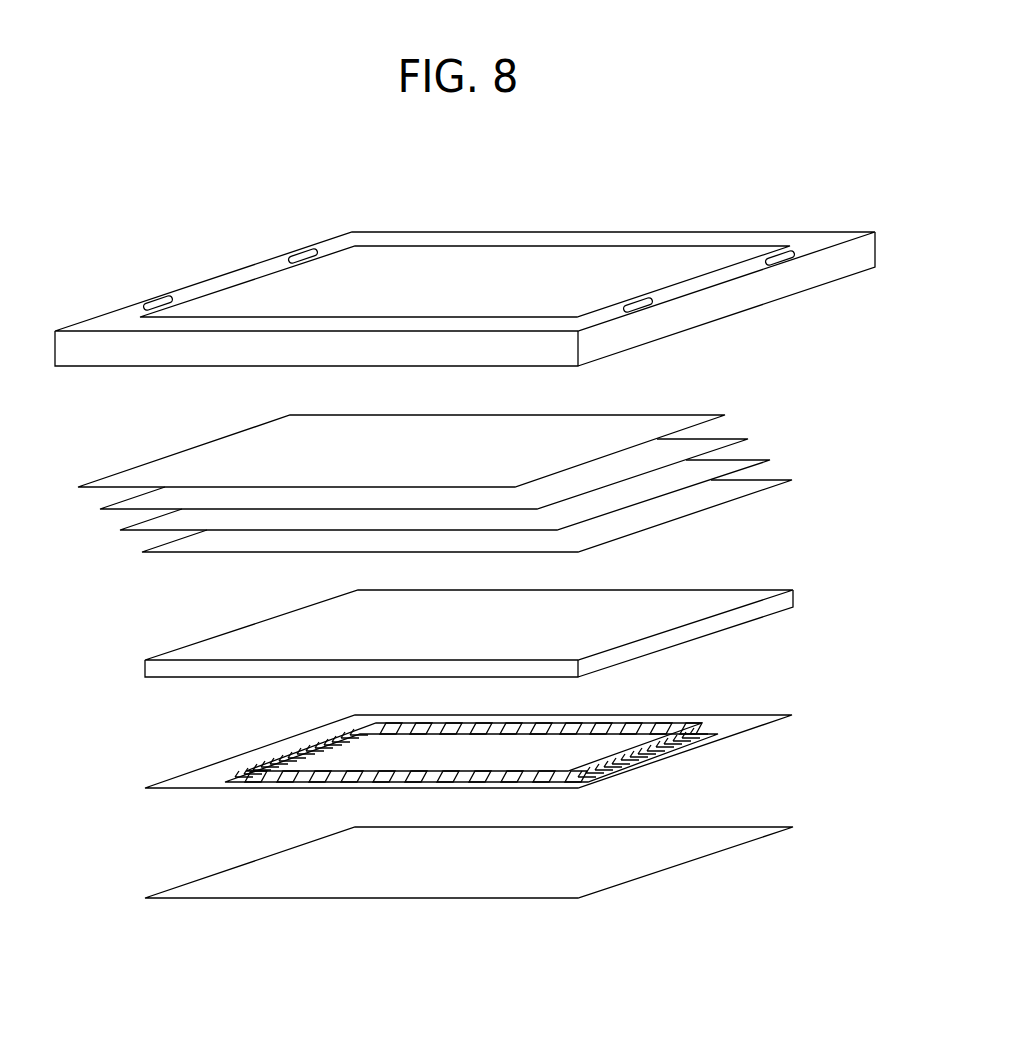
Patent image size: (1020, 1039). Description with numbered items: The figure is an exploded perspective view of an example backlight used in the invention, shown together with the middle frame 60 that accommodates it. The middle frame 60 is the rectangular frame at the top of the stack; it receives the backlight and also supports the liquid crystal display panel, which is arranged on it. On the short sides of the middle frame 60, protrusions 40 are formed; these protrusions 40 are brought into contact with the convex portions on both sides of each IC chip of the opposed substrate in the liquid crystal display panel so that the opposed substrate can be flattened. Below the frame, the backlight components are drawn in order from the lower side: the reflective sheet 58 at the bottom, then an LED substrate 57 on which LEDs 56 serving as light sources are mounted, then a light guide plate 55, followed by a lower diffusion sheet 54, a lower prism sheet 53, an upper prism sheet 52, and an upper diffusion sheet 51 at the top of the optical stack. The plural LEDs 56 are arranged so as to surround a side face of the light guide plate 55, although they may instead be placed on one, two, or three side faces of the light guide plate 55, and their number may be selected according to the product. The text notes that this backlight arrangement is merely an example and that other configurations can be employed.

The protrusion 40 is at (782, 250).
The middle frame 60 is at (813, 242).
The upper diffusion sheet 51 is at (670, 423).
The upper prism sheet 52 is at (708, 443).
The lower prism sheet 53 is at (726, 465).
The lower diffusion sheet 54 is at (752, 486).
The light guide plate 55 is at (725, 598).
The LED 56 is at (641, 722).
The LED substrate 57 is at (743, 724).
The reflective sheet 58 is at (712, 838).